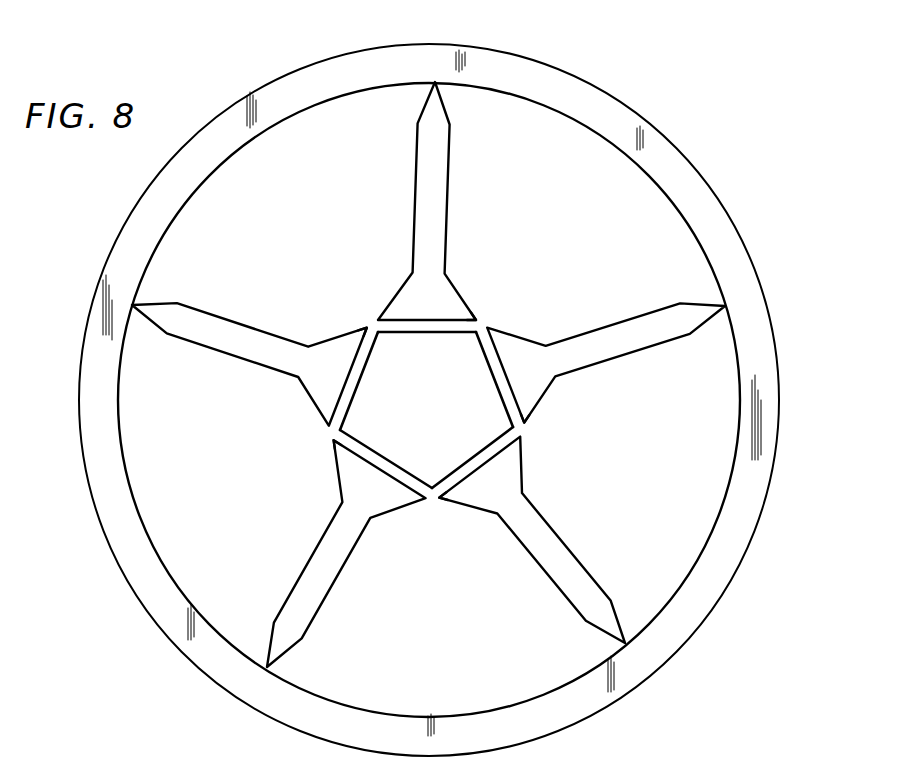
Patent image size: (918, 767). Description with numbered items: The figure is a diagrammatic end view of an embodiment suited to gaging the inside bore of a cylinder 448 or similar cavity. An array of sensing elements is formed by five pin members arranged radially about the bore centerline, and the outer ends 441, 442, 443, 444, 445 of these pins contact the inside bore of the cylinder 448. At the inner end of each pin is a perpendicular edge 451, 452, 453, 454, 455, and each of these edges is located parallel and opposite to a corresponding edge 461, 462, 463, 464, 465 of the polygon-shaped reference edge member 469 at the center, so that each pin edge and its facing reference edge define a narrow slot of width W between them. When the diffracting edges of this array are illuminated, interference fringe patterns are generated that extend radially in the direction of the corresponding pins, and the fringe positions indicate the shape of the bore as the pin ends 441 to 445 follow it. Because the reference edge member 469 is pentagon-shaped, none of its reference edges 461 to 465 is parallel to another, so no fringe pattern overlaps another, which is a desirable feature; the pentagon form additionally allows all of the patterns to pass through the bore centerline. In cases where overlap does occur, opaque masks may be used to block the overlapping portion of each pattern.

The pin member end 441 is at (449, 201).
The pin member end 442 is at (249, 336).
The pin member end 443 is at (327, 553).
The pin member end 444 is at (526, 545).
The pin member end 445 is at (606, 369).
The cylinder 448 is at (683, 213).
The perpendicular edge 451 is at (480, 320).
The perpendicular edge 452 is at (364, 328).
The perpendicular edge 453 is at (336, 458).
The perpendicular edge 454 is at (434, 493).
The perpendicular edge 455 is at (521, 418).
The reference edge 461 is at (422, 333).
The reference edge 462 is at (360, 386).
The reference edge 463 is at (365, 448).
The reference edge 464 is at (473, 457).
The reference edge 465 is at (496, 386).
The polygon-shaped reference edge member 469 is at (426, 410).
The slot width W is at (355, 450).